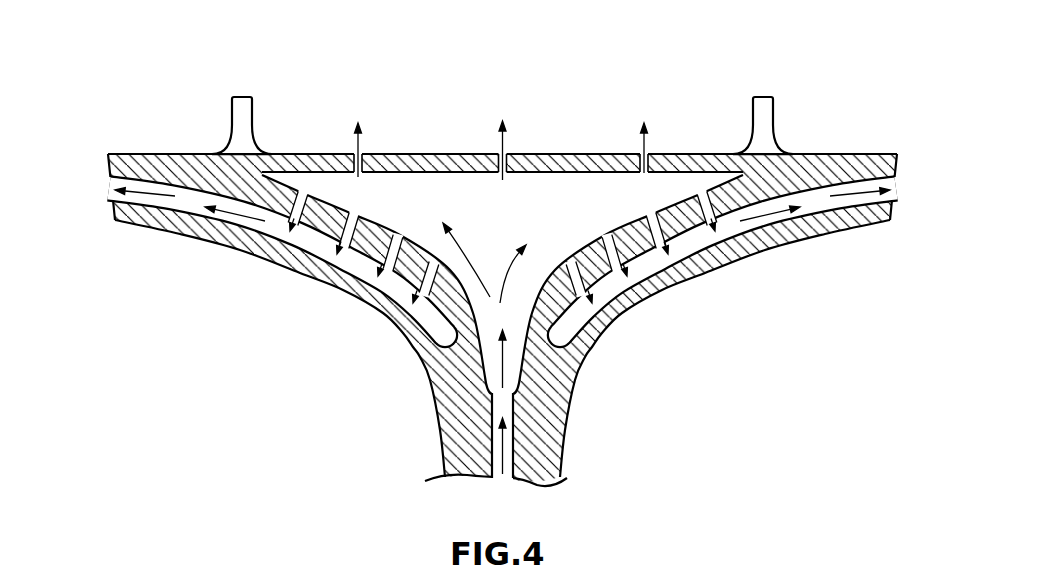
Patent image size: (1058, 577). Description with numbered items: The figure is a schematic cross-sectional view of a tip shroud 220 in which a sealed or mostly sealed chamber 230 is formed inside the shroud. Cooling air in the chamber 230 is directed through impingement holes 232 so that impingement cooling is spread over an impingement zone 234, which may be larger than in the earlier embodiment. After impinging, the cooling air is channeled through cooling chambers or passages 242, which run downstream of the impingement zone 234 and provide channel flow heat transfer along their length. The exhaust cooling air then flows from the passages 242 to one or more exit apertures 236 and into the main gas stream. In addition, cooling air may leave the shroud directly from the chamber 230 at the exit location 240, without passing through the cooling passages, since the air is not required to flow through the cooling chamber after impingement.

The tip shroud 220 is at (797, 111).
The chamber 230 is at (578, 180).
The impingement holes 232 is at (402, 237).
The impingement zone 234 is at (366, 292).
The exit apertures 236 is at (107, 182).
The exit location 240 is at (510, 148).
The cooling chambers or passages 242 is at (309, 243).